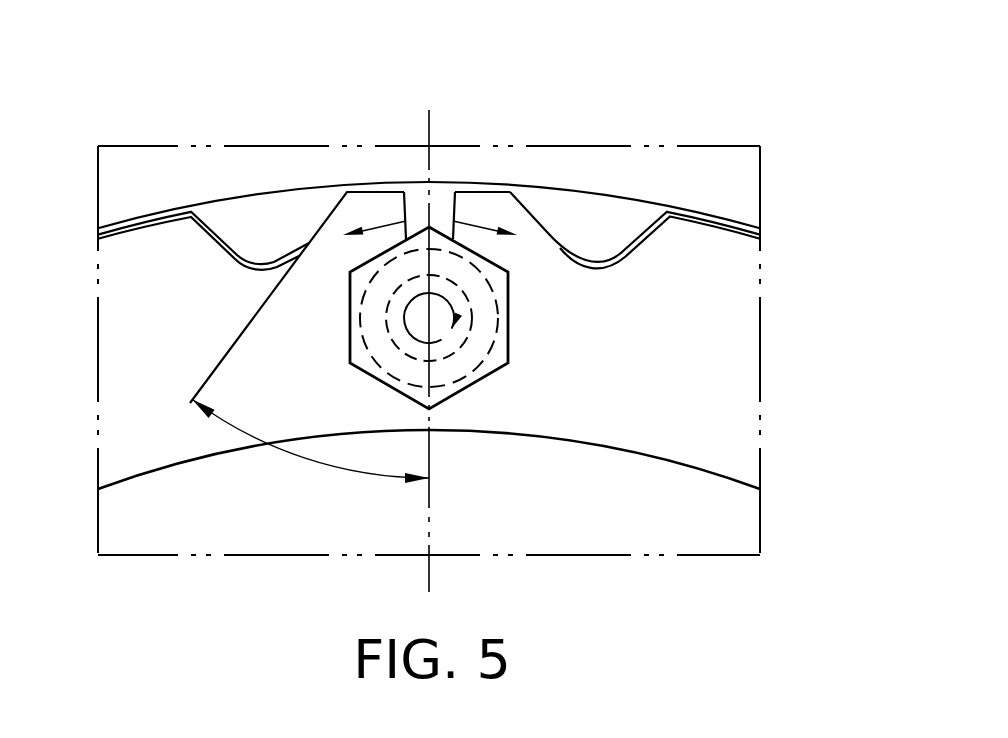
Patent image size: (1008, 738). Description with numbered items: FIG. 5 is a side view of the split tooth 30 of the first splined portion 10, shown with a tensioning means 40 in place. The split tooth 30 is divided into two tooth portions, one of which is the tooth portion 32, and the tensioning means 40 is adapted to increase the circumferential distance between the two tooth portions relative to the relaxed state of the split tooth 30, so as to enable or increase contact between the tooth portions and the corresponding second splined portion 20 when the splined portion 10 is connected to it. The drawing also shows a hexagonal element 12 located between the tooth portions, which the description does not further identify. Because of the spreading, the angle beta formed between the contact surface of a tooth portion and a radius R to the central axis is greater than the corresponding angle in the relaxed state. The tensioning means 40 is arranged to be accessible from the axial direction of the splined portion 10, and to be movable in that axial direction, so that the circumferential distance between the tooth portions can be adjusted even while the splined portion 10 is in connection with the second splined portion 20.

The splined portion 10 is at (697, 358).
The hexagonal nut 12 is at (508, 378).
The second splined portion 20 is at (460, 150).
The split tooth 30 is at (551, 223).
The tooth portion 32 is at (381, 209).
The tensioning means 40 is at (442, 338).
The radius R is at (428, 127).